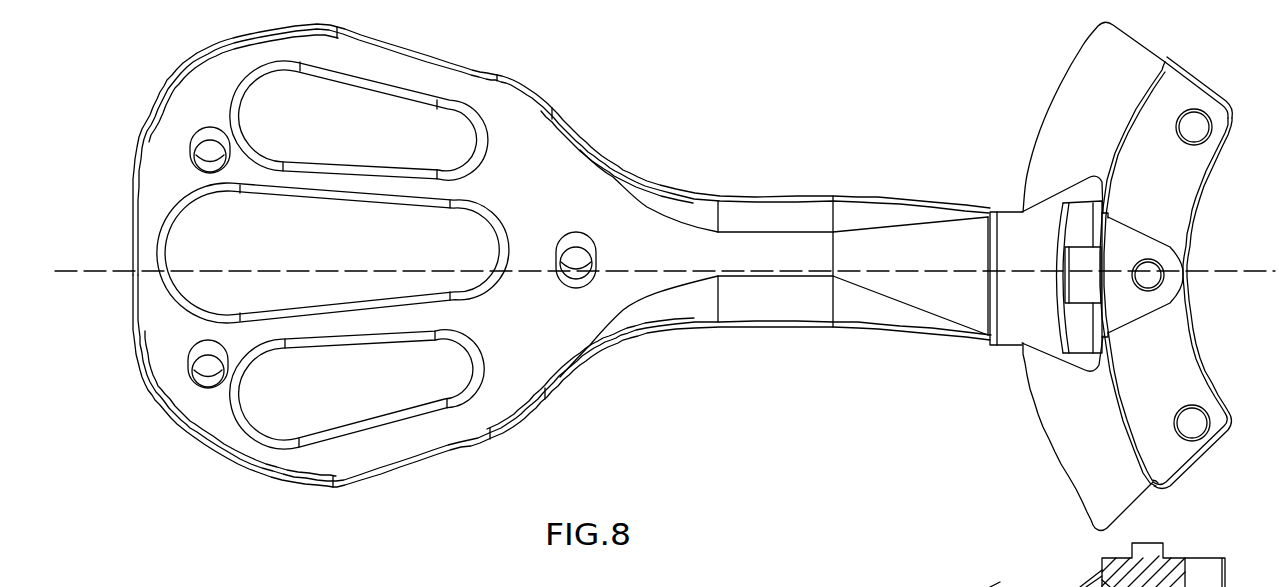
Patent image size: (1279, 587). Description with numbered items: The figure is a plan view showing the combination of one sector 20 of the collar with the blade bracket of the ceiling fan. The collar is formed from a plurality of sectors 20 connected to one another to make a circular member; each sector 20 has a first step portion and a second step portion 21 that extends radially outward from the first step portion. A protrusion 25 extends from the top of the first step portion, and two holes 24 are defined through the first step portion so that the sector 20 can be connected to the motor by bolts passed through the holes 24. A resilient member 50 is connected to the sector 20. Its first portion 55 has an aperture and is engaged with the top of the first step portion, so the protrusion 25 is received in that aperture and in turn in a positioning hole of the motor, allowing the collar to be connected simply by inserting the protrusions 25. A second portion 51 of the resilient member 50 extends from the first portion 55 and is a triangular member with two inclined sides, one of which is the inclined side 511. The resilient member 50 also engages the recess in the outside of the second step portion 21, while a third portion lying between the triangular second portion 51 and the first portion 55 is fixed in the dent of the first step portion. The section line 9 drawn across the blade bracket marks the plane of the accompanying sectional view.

The section line 9- 9 is at (68, 272).
The sector 20 is at (1177, 463).
The second step portion 21 is at (1036, 415).
The holes 24 is at (1203, 134).
The protrusion 25 is at (1150, 547).
The resilient member 50 is at (1073, 262).
The second portion 51 is at (993, 586).
The inclined side 511 is at (1100, 586).
The first portion 55 is at (1117, 553).